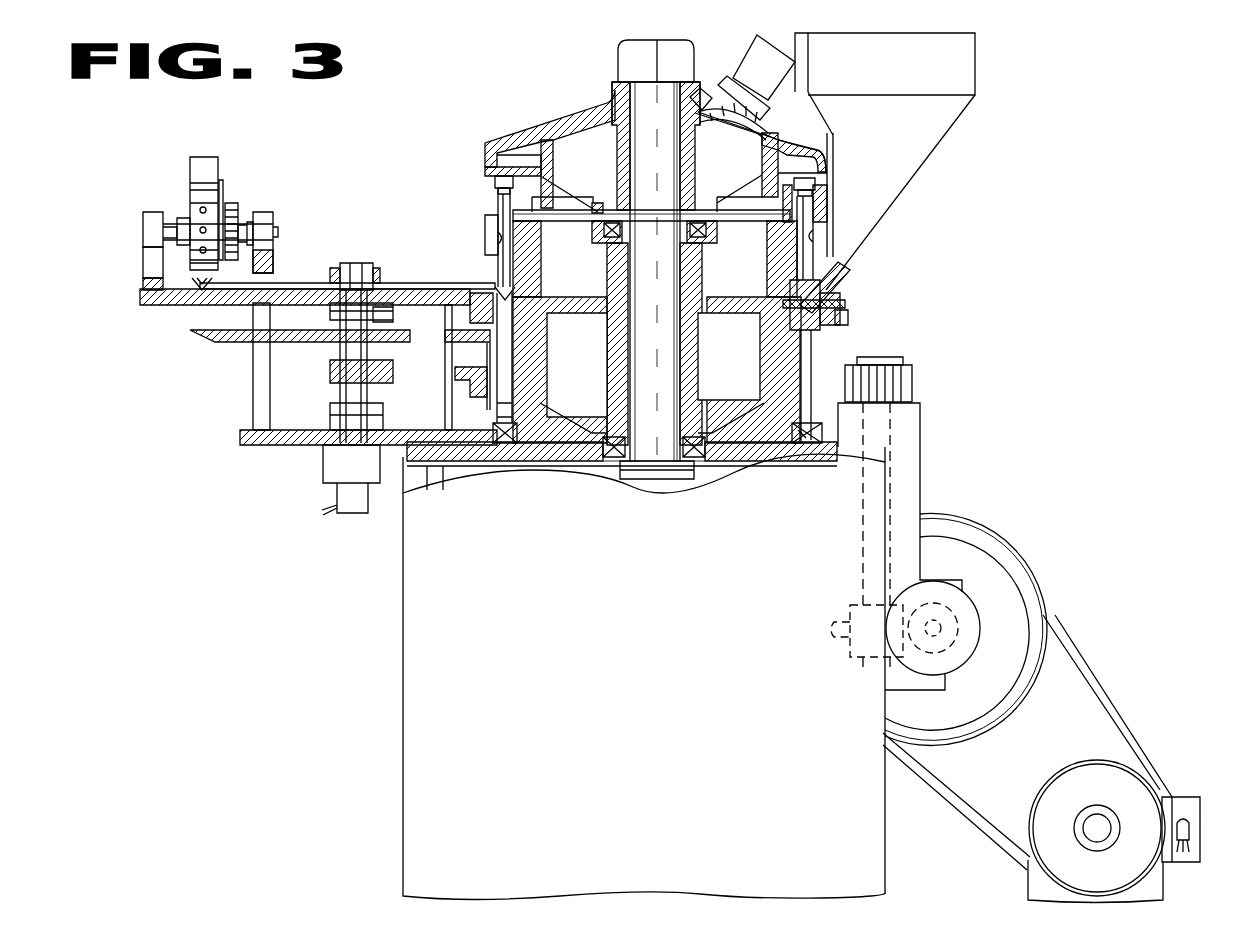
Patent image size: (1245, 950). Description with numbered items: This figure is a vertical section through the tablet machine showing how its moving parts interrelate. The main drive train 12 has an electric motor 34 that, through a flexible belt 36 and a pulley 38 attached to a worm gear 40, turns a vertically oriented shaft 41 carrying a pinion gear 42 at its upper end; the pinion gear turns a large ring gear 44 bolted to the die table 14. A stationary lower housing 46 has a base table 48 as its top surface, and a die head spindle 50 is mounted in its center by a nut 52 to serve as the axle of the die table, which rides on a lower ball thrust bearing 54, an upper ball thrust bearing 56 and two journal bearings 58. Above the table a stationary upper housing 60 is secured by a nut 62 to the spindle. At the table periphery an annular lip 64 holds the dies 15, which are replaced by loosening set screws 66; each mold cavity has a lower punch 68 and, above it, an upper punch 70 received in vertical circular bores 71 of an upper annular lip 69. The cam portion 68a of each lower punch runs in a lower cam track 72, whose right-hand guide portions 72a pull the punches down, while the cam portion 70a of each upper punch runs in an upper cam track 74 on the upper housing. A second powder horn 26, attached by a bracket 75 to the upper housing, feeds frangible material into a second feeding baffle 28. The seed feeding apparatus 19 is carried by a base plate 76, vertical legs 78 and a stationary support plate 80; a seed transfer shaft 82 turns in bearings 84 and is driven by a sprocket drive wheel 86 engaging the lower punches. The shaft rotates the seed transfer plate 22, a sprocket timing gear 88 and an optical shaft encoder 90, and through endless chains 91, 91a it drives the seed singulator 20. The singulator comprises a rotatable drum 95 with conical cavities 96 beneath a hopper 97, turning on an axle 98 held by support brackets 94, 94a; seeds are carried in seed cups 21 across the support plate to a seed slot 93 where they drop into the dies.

The main drive train 12 is at (1123, 670).
The die table 14 is at (840, 326).
The die 15 is at (548, 318).
The seed feeding apparatus 19 is at (130, 296).
The seed singulator 20 is at (245, 176).
The seed cup 21 is at (500, 284).
The seed transfer plate 22 is at (374, 280).
The second powder horn 26 is at (977, 66).
The second feeding baffle 28 is at (842, 292).
The electric motor 34 is at (1076, 789).
The flexible belt 36 is at (1068, 620).
The pulley 38 is at (1030, 571).
The worm gear 40 is at (960, 645).
The vertically oriented shaft 41 is at (863, 540).
The pinion gear 42 is at (912, 378).
The ring gear 44 is at (865, 362).
The lower housing 46 is at (617, 566).
The base table 48 is at (563, 462).
The die head spindle 50 is at (640, 103).
The nut 52 is at (639, 480).
The lower ball thrust bearing 54 is at (692, 458).
The upper ball thrust bearing 56 is at (695, 222).
The journal bearings 58 is at (690, 265).
The upper housing 60 is at (545, 118).
The nut 62 is at (618, 56).
The annular lip 64 is at (848, 306).
The set screws 66 is at (842, 318).
The lower punch 68 is at (527, 358).
The cam portion 68a is at (518, 440).
The upper annular lip 69 is at (485, 228).
The upper punch 70 is at (497, 207).
The cam portion 70a is at (496, 185).
The vertical circular bores 71 is at (500, 242).
The lower cam track 72 is at (505, 458).
The guide portions 72a is at (798, 432).
The upper cam track 74 is at (487, 172).
The bracket 75 is at (745, 85).
The base plate 76 is at (242, 435).
The vertical legs 78 is at (255, 412).
The stationary support plate 80 is at (148, 306).
The seed transfer shaft 82 is at (345, 394).
The bearings 84 is at (330, 313).
The sprocket drive wheel 86 is at (242, 338).
The sprocket timing gear 88 is at (385, 370).
The optical shaft encoder 90 is at (337, 492).
The endless chain 91 is at (330, 362).
The drive chain 91a is at (238, 218).
The seed slot 93 is at (520, 287).
The support bracket 94 is at (152, 265).
The support bracket 94a is at (280, 252).
The rotatable drum 95 is at (230, 205).
The conical cavities 96 is at (203, 209).
The hopper 97 is at (197, 168).
The axle 98 is at (143, 229).